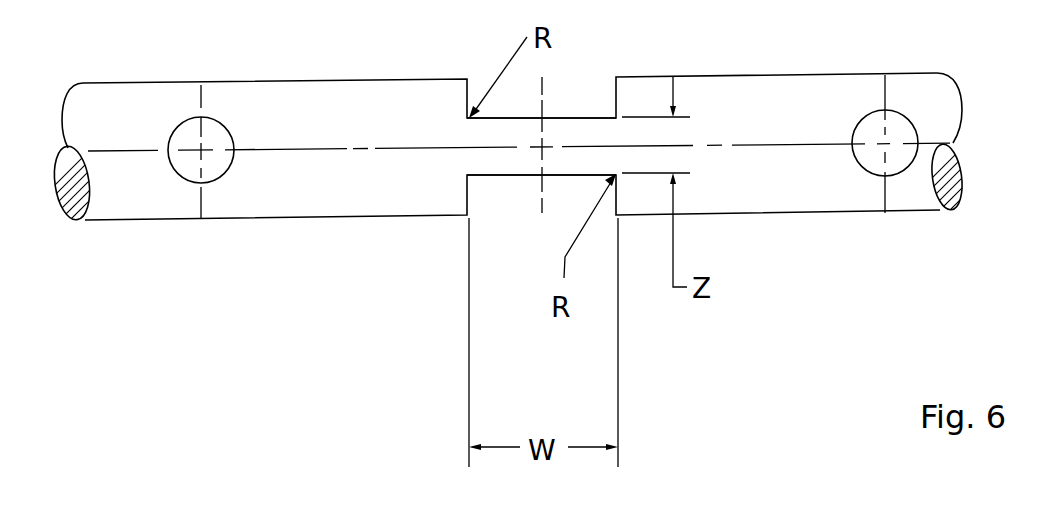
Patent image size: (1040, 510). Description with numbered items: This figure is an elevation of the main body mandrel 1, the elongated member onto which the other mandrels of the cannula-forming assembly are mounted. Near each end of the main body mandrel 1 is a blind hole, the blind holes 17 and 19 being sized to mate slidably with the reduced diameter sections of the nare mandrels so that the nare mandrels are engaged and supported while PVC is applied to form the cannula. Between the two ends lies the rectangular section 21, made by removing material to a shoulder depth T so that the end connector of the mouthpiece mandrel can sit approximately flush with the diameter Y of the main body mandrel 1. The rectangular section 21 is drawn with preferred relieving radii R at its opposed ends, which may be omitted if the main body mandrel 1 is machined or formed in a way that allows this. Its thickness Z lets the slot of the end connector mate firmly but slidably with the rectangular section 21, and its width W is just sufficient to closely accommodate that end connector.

The main body mandrel 1 is at (752, 90).
The blind hole 17 is at (893, 109).
The blind hole 19 is at (215, 120).
The rectangular section 21 is at (571, 112).